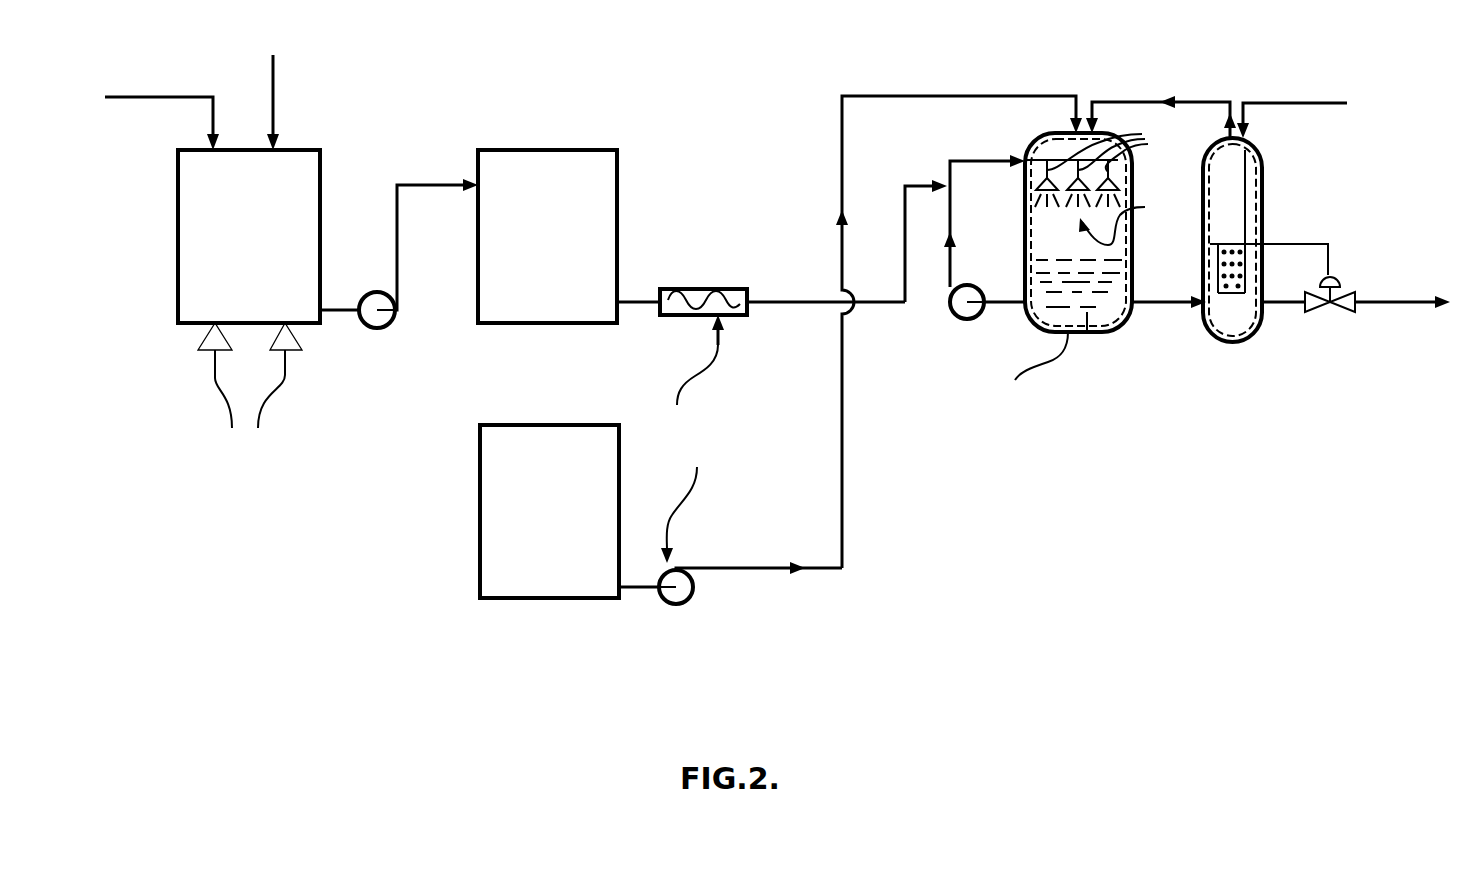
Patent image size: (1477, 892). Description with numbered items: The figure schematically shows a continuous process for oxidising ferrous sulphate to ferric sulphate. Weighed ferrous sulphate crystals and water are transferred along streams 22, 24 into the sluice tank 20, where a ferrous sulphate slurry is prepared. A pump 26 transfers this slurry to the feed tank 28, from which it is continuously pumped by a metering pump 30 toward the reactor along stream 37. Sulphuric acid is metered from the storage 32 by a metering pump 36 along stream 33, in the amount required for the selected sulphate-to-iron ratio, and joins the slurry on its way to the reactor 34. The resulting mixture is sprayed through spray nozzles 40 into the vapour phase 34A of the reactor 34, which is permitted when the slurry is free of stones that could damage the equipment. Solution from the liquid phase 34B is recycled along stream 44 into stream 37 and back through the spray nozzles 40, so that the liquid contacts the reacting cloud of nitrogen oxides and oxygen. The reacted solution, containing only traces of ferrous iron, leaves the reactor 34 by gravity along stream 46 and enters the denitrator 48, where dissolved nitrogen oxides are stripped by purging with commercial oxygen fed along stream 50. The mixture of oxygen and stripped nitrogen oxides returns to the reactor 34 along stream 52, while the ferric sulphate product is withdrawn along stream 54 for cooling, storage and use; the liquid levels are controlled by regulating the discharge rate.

The sluice tank 20 is at (178, 250).
The stream 22 is at (178, 100).
The stream 24 is at (274, 86).
The pump 26 is at (377, 328).
The feed tank 28 is at (605, 200).
The metering pump 30 is at (697, 290).
The storage 32 is at (532, 583).
The stream 33 is at (940, 96).
The reactor 34 is at (1135, 252).
The vapour phase 34A is at (1135, 220).
The liquid phase 34B is at (1087, 330).
The metering pump 36 is at (676, 604).
The stream 37 is at (947, 177).
The spray nozzles 40 is at (1103, 168).
The stream 44 is at (950, 262).
The stream 46 is at (1148, 305).
The denitrator 48 is at (1223, 342).
The stream 50 is at (1285, 105).
The stream 52 is at (1153, 102).
The stream 54 is at (1387, 305).